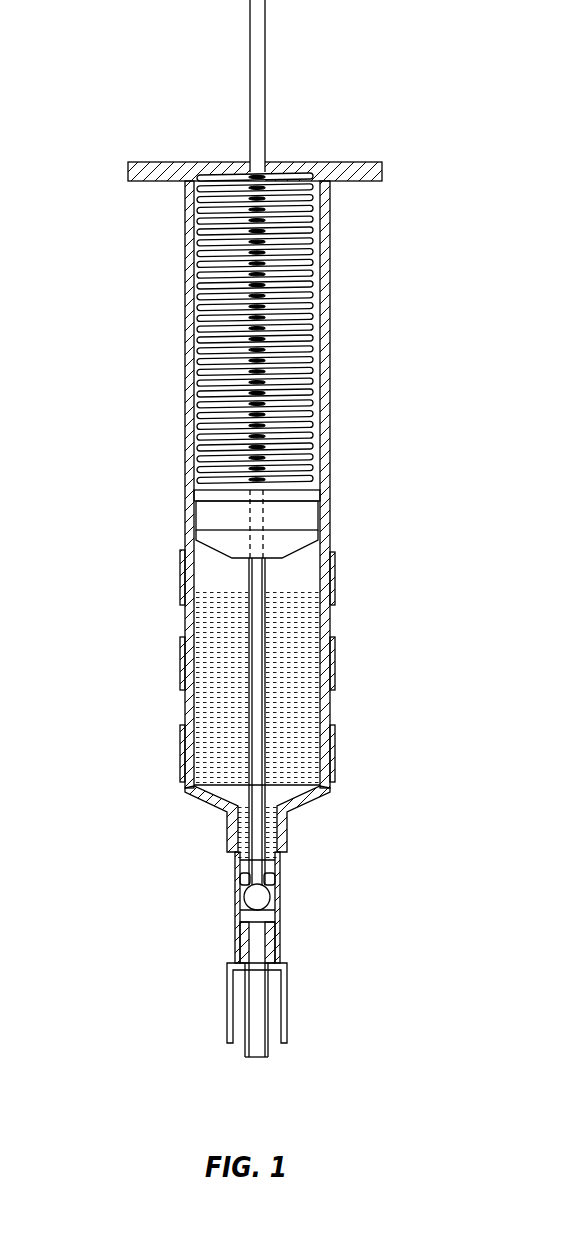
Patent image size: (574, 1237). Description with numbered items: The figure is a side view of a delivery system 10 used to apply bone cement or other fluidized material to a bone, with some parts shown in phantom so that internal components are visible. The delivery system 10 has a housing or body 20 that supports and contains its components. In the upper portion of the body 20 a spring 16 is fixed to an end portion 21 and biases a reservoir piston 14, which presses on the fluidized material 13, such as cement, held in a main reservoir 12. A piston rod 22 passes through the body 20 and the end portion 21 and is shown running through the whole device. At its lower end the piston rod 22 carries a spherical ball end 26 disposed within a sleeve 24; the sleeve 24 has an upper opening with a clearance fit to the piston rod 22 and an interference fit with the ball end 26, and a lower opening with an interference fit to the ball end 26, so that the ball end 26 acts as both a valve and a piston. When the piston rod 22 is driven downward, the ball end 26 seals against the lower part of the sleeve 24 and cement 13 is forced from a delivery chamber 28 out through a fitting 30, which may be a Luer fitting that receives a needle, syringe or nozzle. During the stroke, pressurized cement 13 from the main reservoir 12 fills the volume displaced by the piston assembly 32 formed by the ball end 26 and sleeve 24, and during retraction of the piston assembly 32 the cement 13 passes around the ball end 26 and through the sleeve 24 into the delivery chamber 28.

The delivery system 10 is at (77, 86).
The main reservoir 12 is at (182, 625).
The fluidized material 13 is at (295, 740).
The reservoir piston 14 is at (215, 513).
The spring 16 is at (312, 342).
The body 20 is at (188, 330).
The end portion 21 is at (347, 162).
The piston rod 22 is at (265, 73).
The sleeve 24 is at (240, 866).
The ball end 26 is at (255, 890).
The delivery chamber 28 is at (250, 918).
The fitting 30 is at (227, 1015).
The piston assembly 32 is at (294, 902).